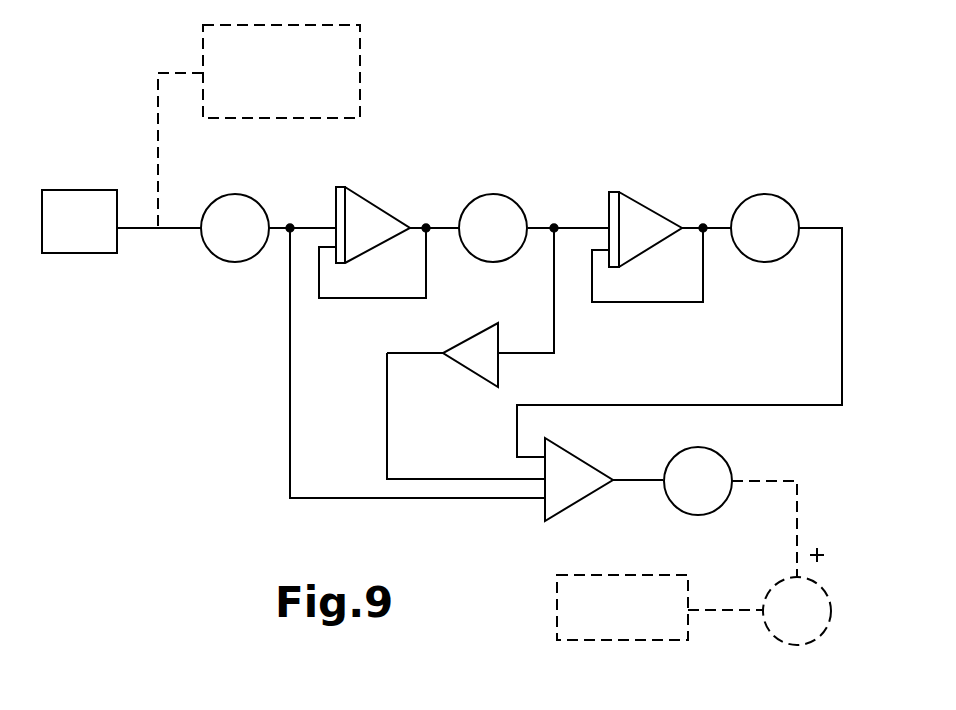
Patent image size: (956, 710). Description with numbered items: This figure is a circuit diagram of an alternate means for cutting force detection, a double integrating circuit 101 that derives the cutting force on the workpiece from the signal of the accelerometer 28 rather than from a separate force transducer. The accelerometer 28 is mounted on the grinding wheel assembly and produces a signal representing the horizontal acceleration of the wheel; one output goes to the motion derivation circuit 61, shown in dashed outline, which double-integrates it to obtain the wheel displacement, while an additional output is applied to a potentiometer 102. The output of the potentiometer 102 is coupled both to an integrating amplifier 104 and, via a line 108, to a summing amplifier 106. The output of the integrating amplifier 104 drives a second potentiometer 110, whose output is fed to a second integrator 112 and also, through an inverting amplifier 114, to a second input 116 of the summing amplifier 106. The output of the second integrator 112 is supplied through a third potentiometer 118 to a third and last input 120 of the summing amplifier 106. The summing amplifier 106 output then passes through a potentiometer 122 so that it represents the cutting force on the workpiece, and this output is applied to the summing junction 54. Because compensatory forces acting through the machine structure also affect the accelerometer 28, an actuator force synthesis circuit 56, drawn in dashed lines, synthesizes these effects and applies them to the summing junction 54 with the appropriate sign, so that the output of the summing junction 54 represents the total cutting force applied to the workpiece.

The accelerometer 28 is at (88, 188).
The motion derivation circuit 61 is at (360, 77).
The double integrating circuit 101 is at (455, 177).
The potentiometer 102 is at (252, 202).
The integrating amplifier 104 is at (373, 207).
The summing amplifier 106 is at (595, 470).
The line 108 is at (473, 498).
The second potentiometer 110 is at (508, 193).
The second integrator 112 is at (645, 200).
The inverting amplifier 114 is at (472, 370).
The second input 116 is at (390, 479).
The third potentiometer 118 is at (762, 200).
The third input 120 is at (528, 453).
The potentiometer 122 is at (718, 475).
The actuator force synthesis circuit 56 is at (610, 575).
The summing junction 54 is at (831, 601).